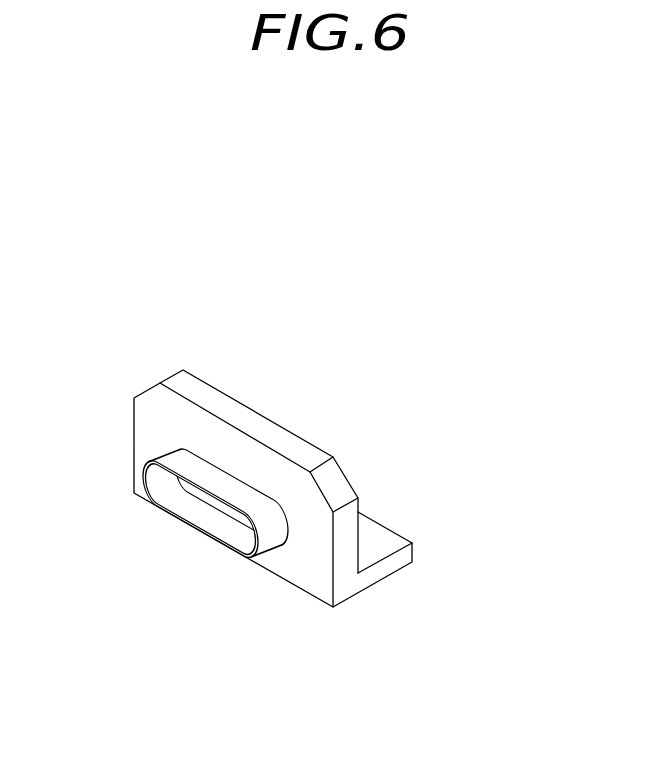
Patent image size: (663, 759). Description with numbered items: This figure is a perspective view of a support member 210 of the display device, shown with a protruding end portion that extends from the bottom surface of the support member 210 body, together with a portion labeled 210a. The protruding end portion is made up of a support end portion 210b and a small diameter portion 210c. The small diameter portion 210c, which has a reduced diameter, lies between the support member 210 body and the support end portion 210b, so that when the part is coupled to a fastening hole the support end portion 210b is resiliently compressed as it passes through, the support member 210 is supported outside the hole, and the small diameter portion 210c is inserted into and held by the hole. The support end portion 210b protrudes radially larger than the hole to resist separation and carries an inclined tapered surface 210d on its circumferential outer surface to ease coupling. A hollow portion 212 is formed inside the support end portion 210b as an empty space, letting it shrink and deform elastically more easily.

The support member 210 is at (98, 250).
The base portion 210a is at (357, 536).
The support end portion 210b is at (208, 552).
The small diameter portion 210c is at (261, 490).
The inclined tapered surface 210d is at (274, 536).
The hollow portion 212 is at (199, 514).